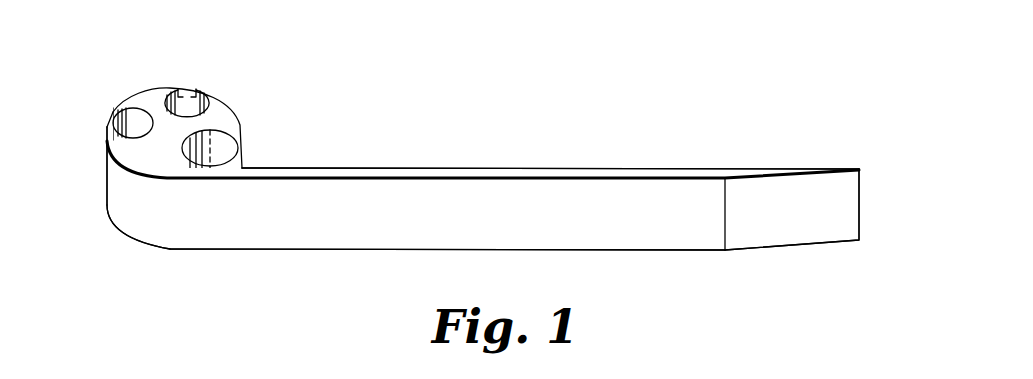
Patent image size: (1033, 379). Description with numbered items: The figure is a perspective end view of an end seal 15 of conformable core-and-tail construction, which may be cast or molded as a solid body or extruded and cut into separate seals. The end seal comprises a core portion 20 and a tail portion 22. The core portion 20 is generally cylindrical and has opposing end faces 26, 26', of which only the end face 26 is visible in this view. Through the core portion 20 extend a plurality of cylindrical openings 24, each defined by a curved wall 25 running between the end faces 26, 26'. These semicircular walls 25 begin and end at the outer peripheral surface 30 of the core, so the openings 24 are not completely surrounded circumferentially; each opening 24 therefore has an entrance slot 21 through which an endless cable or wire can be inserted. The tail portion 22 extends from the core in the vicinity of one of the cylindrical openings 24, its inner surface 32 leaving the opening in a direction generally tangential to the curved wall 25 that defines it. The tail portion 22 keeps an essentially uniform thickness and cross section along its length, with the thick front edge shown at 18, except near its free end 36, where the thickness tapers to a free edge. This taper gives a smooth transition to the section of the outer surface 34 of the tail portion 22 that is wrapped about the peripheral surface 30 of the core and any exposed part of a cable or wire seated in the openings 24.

The end seal 15 is at (471, 154).
The elongated plate body / shaft 18 is at (368, 166).
The core portion 20 is at (156, 84).
The entrance slot 21 is at (194, 96).
The tail portion 22 is at (703, 251).
The cylindrical openings 24 is at (116, 124).
The curved walls 25 is at (200, 95).
The end face 26 is at (142, 75).
The end face 26' is at (113, 235).
The outer peripheral surface 30 is at (107, 141).
The inner surface 32 is at (628, 167).
The outer surface 34 is at (630, 241).
The free end 36 is at (859, 236).